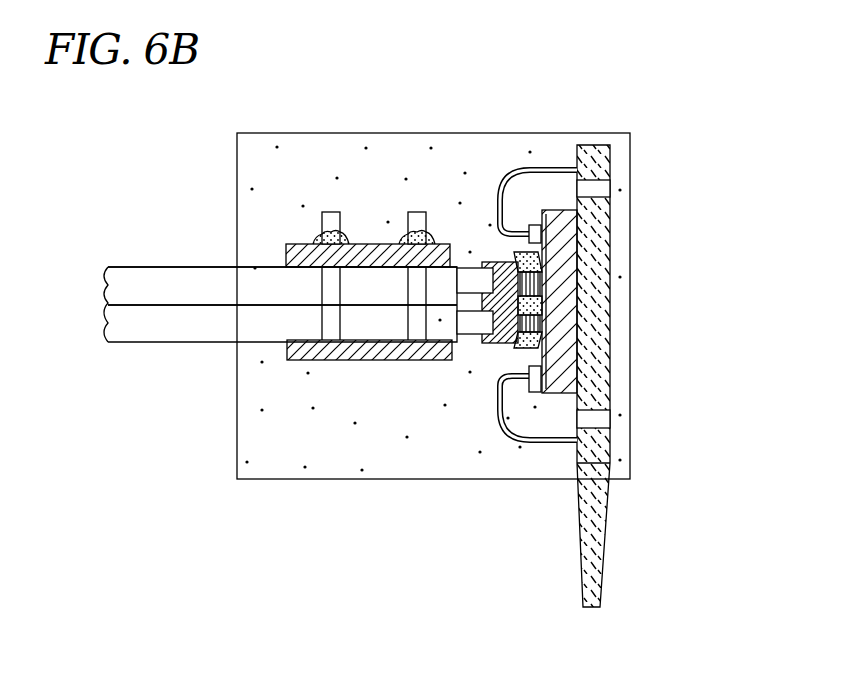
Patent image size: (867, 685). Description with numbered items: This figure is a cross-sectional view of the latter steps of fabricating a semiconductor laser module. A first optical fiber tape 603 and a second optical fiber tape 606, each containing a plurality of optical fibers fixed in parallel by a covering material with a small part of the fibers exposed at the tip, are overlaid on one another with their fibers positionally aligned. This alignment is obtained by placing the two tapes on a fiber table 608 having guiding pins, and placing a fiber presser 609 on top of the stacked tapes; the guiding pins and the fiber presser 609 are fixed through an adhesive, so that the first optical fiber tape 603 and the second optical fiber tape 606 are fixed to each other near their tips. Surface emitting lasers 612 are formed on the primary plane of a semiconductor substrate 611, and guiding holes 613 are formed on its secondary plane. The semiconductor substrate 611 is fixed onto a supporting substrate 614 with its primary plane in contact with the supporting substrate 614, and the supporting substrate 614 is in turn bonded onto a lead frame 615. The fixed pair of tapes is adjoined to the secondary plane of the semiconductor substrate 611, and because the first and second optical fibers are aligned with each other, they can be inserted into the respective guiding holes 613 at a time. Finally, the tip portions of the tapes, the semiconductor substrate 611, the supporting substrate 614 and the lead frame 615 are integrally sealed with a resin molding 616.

The first optical fiber tape 603 is at (247, 323).
The second optical fiber tape 606 is at (152, 293).
The fiber table 608 is at (330, 352).
The fiber presser 609 is at (305, 260).
The semiconductor substrate 611 is at (495, 260).
The surface emitting lasers 612 is at (519, 262).
The guiding holes 613 is at (493, 318).
The supporting substrate 614 is at (557, 392).
The lead frame 615 is at (600, 373).
The resin molding 616 is at (256, 161).